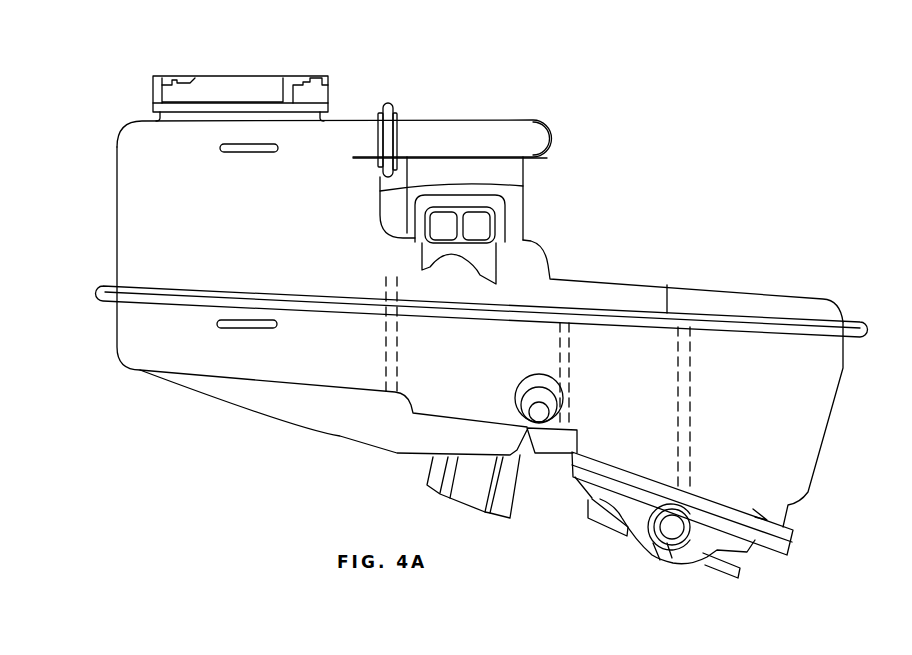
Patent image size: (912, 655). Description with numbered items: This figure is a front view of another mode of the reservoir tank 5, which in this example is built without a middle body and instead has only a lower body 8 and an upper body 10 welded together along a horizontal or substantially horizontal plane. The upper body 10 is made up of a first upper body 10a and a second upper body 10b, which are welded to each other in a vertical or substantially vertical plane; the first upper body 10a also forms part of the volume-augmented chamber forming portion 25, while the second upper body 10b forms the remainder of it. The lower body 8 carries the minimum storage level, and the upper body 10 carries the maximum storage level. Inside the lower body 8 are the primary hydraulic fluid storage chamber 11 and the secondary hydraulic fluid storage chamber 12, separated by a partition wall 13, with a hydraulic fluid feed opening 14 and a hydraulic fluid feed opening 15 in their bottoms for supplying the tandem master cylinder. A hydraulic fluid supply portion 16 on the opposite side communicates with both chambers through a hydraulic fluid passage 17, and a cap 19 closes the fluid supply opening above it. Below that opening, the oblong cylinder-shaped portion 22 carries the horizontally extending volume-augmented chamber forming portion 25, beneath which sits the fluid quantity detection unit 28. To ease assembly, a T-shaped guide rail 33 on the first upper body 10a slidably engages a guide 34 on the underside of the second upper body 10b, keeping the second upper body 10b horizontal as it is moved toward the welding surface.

The reservoir tank 5 is at (117, 207).
The lower body 8 is at (127, 345).
The upper body 10 is at (431, 129).
The first upper body 10a is at (340, 147).
The second upper body 10b is at (365, 65).
The primary hydraulic fluid storage chamber 11 is at (805, 455).
The secondary hydraulic fluid storage chamber 12 is at (623, 433).
The partition wall 13 is at (692, 404).
The hydraulic fluid feed opening 14 is at (715, 570).
The hydraulic fluid feed opening 15 is at (597, 530).
The hydraulic fluid supply portion 16 is at (190, 353).
The hydraulic fluid passage 17 is at (393, 248).
The cap 19 is at (253, 76).
The oblong cylinder-shaped portion 22 is at (525, 187).
The volume-augmented chamber forming portion 25 is at (532, 133).
The fluid quantity detection unit 28 is at (495, 213).
The T-shaped guide rail 33 is at (512, 233).
The guide 34 is at (523, 165).